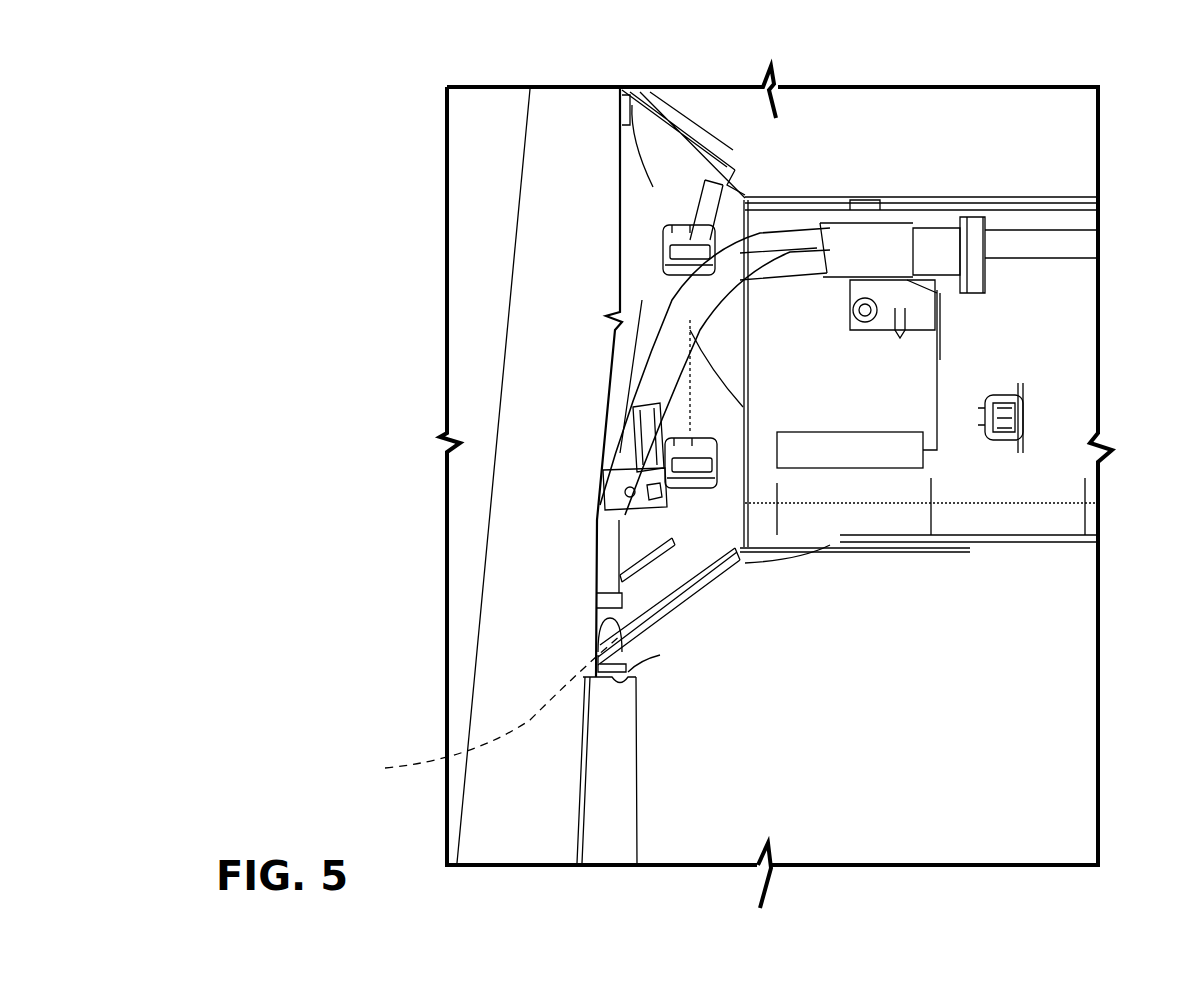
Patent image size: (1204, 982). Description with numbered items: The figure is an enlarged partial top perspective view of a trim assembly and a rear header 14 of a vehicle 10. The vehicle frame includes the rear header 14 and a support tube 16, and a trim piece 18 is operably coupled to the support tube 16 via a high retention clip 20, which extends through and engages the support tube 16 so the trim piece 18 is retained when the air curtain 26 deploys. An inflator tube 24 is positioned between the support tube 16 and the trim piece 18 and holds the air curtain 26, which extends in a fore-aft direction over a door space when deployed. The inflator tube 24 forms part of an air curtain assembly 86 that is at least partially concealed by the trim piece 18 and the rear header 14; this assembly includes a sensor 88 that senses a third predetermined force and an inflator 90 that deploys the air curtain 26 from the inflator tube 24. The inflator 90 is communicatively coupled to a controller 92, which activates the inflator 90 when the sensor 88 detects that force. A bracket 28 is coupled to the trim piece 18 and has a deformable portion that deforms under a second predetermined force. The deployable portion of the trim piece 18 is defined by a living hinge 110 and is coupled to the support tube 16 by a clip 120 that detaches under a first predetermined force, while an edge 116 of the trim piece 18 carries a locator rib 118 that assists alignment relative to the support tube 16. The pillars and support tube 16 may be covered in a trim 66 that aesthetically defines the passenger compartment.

The vehicle 10 is at (366, 133).
The rear header 14 is at (1058, 218).
The support tube 16 is at (503, 650).
The trim piece 18 is at (653, 183).
The high retention clip 20 is at (718, 222).
The inflator tube 24 is at (777, 267).
The air curtain 26 is at (486, 709).
The bracket 28 is at (632, 455).
The trim 66 is at (596, 808).
The air curtain assembly 86 is at (663, 512).
The sensor 88 is at (913, 243).
The inflator 90 is at (603, 555).
The controller 92 is at (873, 468).
The living hinge 110 is at (708, 597).
The edge 116 is at (745, 578).
The locator rib 118 is at (638, 577).
The clip 120 is at (717, 470).